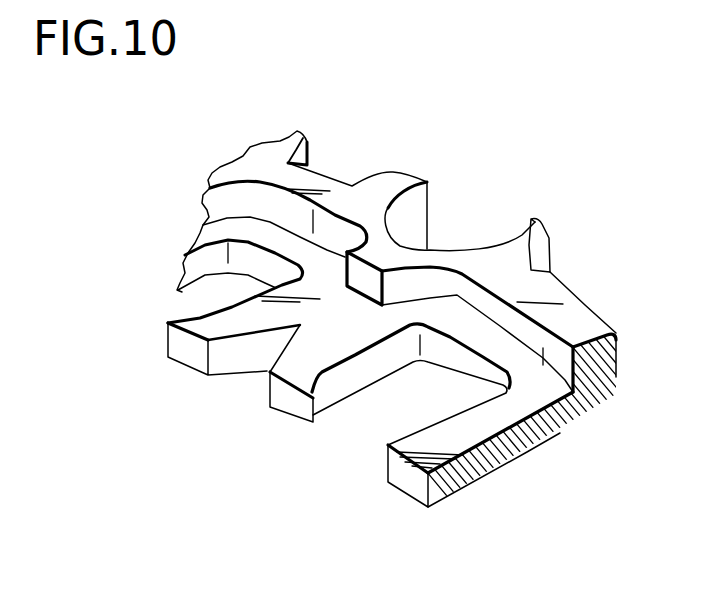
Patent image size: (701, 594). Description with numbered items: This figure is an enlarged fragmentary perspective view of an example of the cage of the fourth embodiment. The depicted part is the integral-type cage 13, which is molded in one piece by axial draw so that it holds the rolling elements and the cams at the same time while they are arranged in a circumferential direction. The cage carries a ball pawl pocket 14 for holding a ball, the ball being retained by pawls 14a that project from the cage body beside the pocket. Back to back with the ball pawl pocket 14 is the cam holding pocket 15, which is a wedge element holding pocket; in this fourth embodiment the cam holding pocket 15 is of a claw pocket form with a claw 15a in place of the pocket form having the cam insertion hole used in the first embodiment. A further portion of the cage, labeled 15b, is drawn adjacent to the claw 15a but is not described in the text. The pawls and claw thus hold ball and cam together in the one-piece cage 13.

The integral-type cage 13 is at (596, 300).
The ball pawl pocket 14 is at (417, 227).
The pawl 14a is at (430, 188).
The cam holding pocket 15 is at (457, 415).
The claw 15a is at (313, 423).
The arm end 15b is at (250, 380).